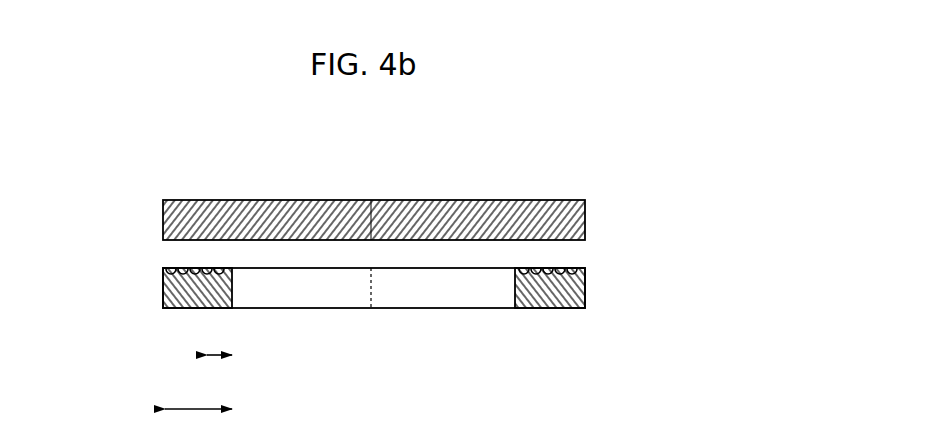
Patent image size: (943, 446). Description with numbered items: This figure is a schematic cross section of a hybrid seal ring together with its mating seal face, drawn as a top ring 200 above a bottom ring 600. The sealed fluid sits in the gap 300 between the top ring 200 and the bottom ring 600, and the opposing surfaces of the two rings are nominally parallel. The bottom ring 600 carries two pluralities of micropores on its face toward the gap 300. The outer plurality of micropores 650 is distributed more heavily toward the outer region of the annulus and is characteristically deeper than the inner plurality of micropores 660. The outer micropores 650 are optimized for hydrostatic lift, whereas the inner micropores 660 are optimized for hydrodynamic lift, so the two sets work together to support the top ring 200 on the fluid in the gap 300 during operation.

The top ring 200 is at (586, 211).
The gap 300 is at (557, 252).
The bottom ring 600 is at (586, 293).
The outer plurality of micropores 650 is at (163, 267).
The inner plurality of micropores 660 is at (212, 267).